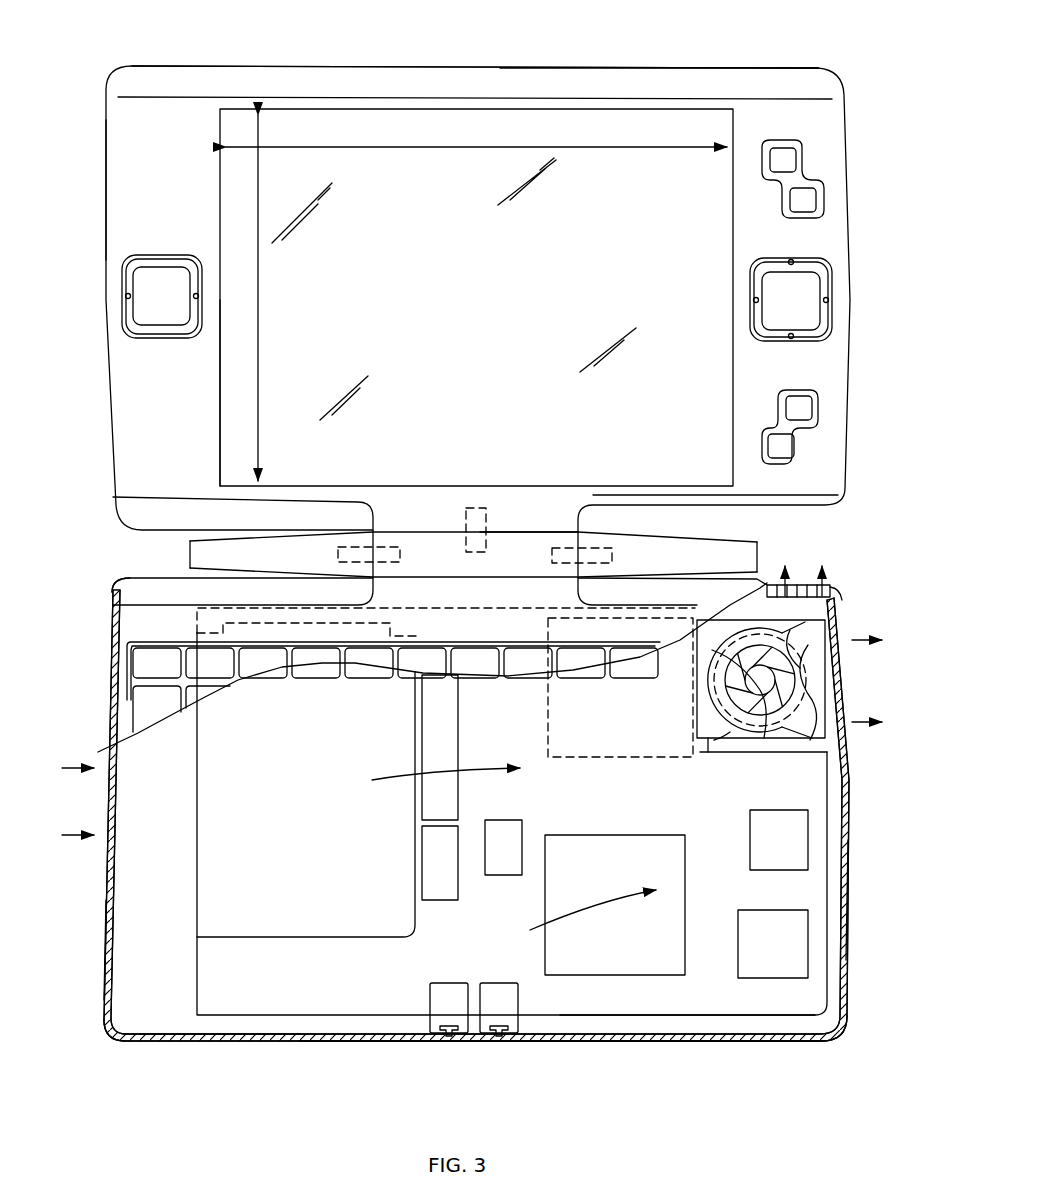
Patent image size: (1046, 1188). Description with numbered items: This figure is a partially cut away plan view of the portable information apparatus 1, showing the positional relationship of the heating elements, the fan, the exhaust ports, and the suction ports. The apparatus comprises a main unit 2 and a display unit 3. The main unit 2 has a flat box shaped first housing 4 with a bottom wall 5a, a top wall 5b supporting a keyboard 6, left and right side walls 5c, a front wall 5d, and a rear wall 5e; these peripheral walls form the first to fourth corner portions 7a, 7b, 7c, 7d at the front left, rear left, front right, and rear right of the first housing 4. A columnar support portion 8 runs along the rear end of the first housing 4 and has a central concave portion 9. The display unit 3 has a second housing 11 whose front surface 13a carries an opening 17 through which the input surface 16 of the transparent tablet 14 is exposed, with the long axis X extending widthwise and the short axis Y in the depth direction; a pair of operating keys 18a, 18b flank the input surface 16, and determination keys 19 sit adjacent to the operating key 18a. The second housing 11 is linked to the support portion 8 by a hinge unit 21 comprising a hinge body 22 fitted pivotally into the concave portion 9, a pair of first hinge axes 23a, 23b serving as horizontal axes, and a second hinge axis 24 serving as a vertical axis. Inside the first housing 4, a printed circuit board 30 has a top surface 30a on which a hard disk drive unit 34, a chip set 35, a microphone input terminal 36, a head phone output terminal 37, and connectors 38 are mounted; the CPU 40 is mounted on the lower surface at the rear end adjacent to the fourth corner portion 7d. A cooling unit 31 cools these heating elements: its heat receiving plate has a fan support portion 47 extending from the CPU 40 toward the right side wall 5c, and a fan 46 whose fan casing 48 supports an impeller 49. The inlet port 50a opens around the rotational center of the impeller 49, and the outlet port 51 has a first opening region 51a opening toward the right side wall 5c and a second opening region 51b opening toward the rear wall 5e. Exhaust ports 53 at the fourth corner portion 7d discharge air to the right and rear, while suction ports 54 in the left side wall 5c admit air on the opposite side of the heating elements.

The portable information apparatus 1 is at (706, 38).
The main unit 2 is at (736, 1046).
The display unit 3 is at (272, 60).
The first housing 4 is at (118, 982).
The bottom wall 5a is at (166, 1022).
The top wall 5b is at (152, 628).
The side walls 5c is at (108, 938).
The front wall 5d is at (376, 1044).
The rear wall 5e is at (762, 598).
The keyboard 6 is at (158, 708).
The first corner portion 7a is at (118, 1042).
The second corner portion 7b is at (128, 586).
The third corner portion 7c is at (824, 1042).
The fourth corner portion 7d is at (822, 590).
The support portion 8 is at (197, 555).
The concave portion 9 is at (574, 566).
The second housing 11 is at (414, 64).
The front surface 13a is at (145, 115).
The tablet 14 is at (632, 115).
The input surface 16 is at (476, 297).
The opening 17 is at (222, 392).
The operating key 18a is at (775, 290).
The operating key 18b is at (162, 285).
The determination keys 19 is at (798, 196).
The hinge unit 21 is at (430, 538).
The hinge body 22 is at (522, 548).
The first hinge axis 23a is at (388, 548).
The first hinge axis 23b is at (582, 550).
The second hinge axis 24 is at (478, 510).
The printed circuit board 30 is at (268, 994).
The top surface 30a is at (612, 1000).
The cooling unit 31 is at (720, 754).
The hard disk drive unit 34 is at (336, 918).
The chip set 35 is at (596, 856).
The microphone input terminal 36 is at (450, 994).
The head phone output terminal 37 is at (496, 994).
The connectors 38 is at (440, 850).
The CPU 40 is at (578, 713).
The fan 46 is at (744, 768).
The fan support portion 47 is at (702, 748).
The fan casing 48 is at (728, 648).
The impeller 49 is at (736, 722).
The inlet port 50a is at (716, 708).
The outlet port 51 is at (762, 716).
The first opening region 51a is at (796, 700).
The second opening region 51b is at (800, 632).
The exhaust ports 53 is at (818, 580).
The suction ports 54 is at (112, 808).